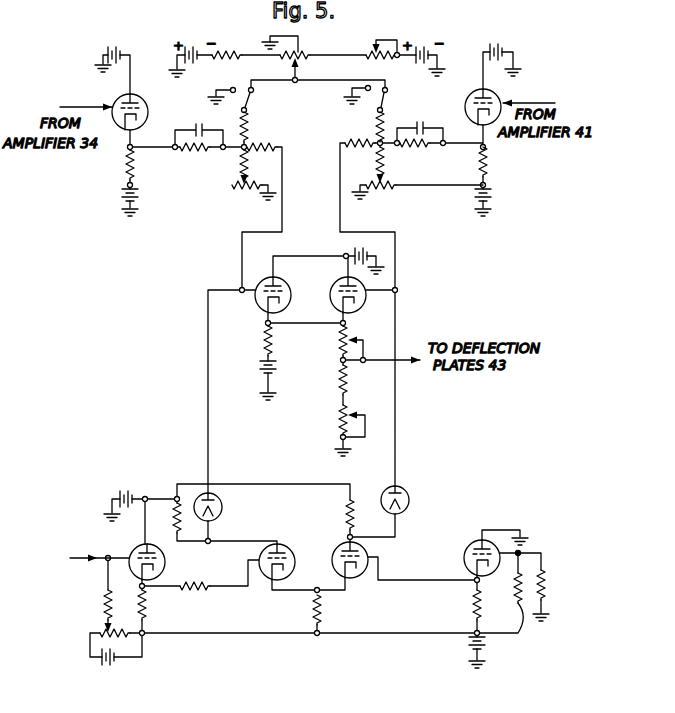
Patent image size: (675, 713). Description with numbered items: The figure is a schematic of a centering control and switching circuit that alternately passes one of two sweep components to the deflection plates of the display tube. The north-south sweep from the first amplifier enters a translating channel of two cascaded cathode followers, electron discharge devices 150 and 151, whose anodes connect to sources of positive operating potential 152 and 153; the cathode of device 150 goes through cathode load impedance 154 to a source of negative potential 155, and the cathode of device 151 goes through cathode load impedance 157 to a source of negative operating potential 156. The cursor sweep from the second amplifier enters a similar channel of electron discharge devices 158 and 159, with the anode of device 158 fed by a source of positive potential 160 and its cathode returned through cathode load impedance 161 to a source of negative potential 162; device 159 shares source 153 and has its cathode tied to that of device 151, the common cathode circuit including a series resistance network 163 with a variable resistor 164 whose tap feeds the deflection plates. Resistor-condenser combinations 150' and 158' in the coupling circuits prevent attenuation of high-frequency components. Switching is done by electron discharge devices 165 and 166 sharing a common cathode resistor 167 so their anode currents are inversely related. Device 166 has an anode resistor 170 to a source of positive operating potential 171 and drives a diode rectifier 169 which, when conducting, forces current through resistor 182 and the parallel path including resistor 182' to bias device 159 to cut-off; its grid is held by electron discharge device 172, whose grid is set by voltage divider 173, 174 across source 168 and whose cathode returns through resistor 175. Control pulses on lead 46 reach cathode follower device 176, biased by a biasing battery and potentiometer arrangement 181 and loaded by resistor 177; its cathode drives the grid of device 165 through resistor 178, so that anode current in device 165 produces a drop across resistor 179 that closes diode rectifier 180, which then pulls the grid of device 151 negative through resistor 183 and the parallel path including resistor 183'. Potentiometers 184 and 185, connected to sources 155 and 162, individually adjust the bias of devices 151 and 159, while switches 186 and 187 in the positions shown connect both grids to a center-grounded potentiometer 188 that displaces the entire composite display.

The lead 46 is at (74, 557).
The electron discharge device 150 is at (148, 112).
The resistor-condenser combination 150' is at (181, 158).
The electron discharge device 151 is at (257, 298).
The source of positive operating potential 152 is at (110, 50).
The source of positive operating potential 153 is at (385, 242).
The cathode load impedance 154 is at (127, 170).
The source of negative potential 155 is at (123, 197).
The source of negative operating potential 156 is at (259, 375).
The cathode load impedance 157 is at (261, 341).
The electron discharge device 158 is at (471, 102).
The resistor-condenser combination 158' is at (433, 155).
The electron discharge device 159 is at (333, 298).
The source of positive potential 160 is at (494, 43).
The cathode load impedance 161 is at (485, 164).
The source of negative potential 162 is at (473, 200).
The series resistance network 163 is at (381, 386).
The variable resistor 164 is at (340, 424).
The electron discharge device 165 is at (278, 543).
The electron discharge device 166 is at (337, 551).
The common cathode resistor 167 is at (322, 608).
The source 168 is at (472, 653).
The diode rectifier 169 is at (409, 491).
The anode resistor 170 is at (346, 512).
The source of positive operating potential 171 is at (118, 492).
The electron discharge device 172 is at (464, 559).
The voltage divider resistor 173 is at (532, 611).
The voltage divider resistor 174 is at (545, 585).
The resistor 175 is at (470, 605).
The cathode follower device 176 is at (165, 562).
The resistor 177 is at (147, 612).
The resistor 178 is at (200, 592).
The resistor 179 is at (174, 505).
The diode rectifier 180 is at (222, 503).
The biasing battery and potentiometer arrangement 181 is at (89, 650).
The resistor 182 is at (357, 135).
The resistor 182' is at (398, 162).
The resistor 183 is at (281, 141).
The resistor 183' is at (223, 165).
The potentiometer 184 is at (249, 193).
The potentiometer 185 is at (417, 192).
The switch 186 is at (264, 100).
The switch 187 is at (399, 100).
The potentiometer 188 is at (305, 50).